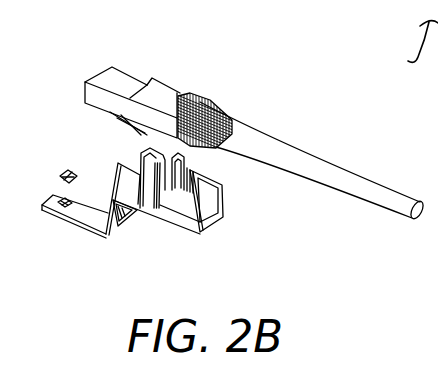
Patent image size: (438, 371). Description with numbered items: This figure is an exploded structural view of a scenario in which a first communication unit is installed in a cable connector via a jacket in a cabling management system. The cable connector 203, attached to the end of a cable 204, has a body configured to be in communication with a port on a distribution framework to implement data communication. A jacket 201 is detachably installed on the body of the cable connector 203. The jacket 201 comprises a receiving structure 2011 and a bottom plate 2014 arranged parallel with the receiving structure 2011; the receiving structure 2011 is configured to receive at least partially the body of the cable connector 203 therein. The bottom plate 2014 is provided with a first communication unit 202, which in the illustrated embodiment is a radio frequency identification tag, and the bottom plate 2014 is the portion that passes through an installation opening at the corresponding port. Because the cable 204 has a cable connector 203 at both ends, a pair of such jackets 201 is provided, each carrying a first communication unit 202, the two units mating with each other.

The jacket 201 is at (158, 220).
The receiving structure 2011 is at (197, 184).
The bottom plate 2014 is at (80, 213).
The first communication unit 202 is at (67, 170).
The cable connector 203 is at (116, 78).
The cable 204 is at (348, 182).